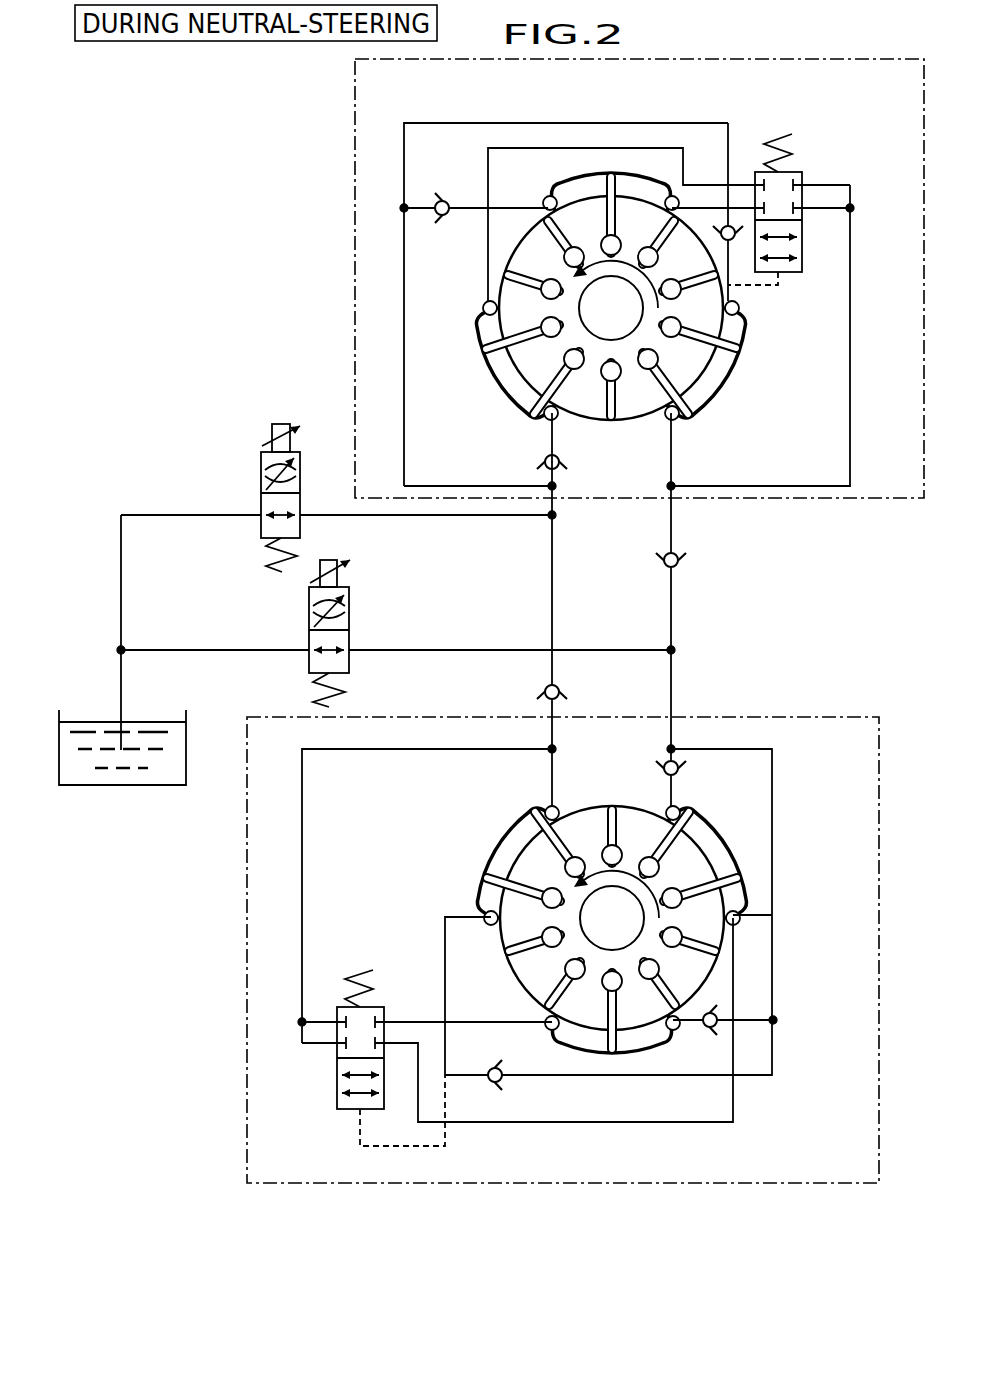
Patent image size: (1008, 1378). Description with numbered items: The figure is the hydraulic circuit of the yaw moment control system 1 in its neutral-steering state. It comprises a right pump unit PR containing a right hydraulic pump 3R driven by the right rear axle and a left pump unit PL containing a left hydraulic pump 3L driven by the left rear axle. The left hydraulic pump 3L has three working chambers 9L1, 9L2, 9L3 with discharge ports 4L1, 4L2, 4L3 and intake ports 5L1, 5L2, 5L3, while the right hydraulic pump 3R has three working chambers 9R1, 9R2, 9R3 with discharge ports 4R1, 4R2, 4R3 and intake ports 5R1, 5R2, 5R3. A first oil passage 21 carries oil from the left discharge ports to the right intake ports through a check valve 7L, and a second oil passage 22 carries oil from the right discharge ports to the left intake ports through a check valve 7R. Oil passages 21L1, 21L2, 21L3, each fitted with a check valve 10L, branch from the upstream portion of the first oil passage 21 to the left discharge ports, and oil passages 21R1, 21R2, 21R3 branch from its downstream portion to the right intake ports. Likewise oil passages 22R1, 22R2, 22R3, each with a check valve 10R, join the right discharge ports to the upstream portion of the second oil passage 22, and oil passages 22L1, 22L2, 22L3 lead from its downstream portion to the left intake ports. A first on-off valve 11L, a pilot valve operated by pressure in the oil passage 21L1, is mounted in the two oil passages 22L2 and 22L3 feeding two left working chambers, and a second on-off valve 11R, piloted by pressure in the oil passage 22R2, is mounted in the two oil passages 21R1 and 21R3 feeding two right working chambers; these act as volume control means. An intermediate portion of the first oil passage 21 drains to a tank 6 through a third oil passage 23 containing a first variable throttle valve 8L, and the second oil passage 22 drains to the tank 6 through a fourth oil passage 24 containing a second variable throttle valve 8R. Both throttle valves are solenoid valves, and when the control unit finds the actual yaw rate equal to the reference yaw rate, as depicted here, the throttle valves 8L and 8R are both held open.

The yaw moment control system 1 is at (178, 872).
The right pump unit PR is at (345, 205).
The left pump unit PL is at (775, 710).
The right hydraulic pump 3R is at (378, 318).
The left hydraulic pump 3L is at (788, 848).
The discharge port 4R1 is at (556, 418).
The discharge port 4R2 is at (740, 322).
The discharge port 4R3 is at (540, 200).
The discharge port 4L1 is at (494, 920).
The discharge port 4L2 is at (668, 1030).
The discharge port 4L3 is at (668, 810).
The intake port 5R1 is at (490, 312).
The intake port 5R2 is at (668, 416).
The intake port 5R3 is at (666, 196).
The intake port 5L1 is at (556, 808).
The intake port 5L2 is at (555, 1032).
The intake port 5L3 is at (772, 915).
The tank 6 is at (186, 744).
The check valve 7R is at (562, 692).
The check valve 7L is at (662, 553).
The second variable throttle valve 8R is at (250, 487).
The first variable throttle valve 8L is at (300, 658).
The working chamber 9R1 is at (507, 389).
The working chamber 9R2 is at (712, 382).
The working chamber 9R3 is at (582, 190).
The working chamber 9L1 is at (502, 855).
The working chamber 9L2 is at (630, 1038).
The working chamber 9L3 is at (718, 845).
The check valve 10R is at (447, 216).
The check valve 10L is at (662, 760).
The second on-off valve 11R is at (802, 128).
The first on-off valve 11L is at (330, 1074).
The first oil passage 21 is at (671, 612).
The second oil passage 22 is at (553, 573).
The third oil passage 23 is at (420, 652).
The fourth oil passage 24 is at (407, 517).
The oil passage 21R1 is at (828, 183).
The oil passage 21R2 is at (672, 443).
The oil passage 21R3 is at (851, 212).
The oil passage 22R1 is at (550, 444).
The oil passage 22R2 is at (730, 142).
The oil passage 22R3 is at (468, 207).
The oil passage 21L1 is at (443, 932).
The oil passage 21L2 is at (750, 1024).
The oil passage 21L3 is at (674, 792).
The oil passage 22L1 is at (550, 774).
The oil passage 22L2 is at (412, 1020).
The oil passage 22L3 is at (473, 1124).